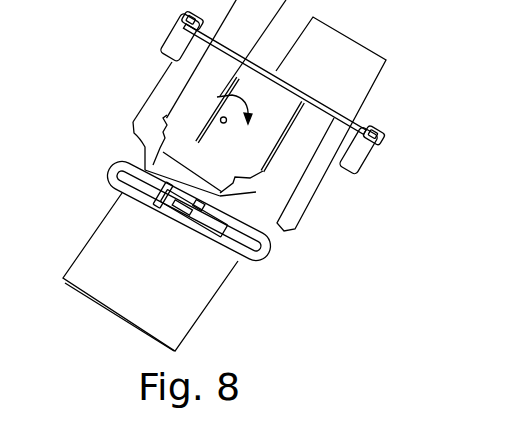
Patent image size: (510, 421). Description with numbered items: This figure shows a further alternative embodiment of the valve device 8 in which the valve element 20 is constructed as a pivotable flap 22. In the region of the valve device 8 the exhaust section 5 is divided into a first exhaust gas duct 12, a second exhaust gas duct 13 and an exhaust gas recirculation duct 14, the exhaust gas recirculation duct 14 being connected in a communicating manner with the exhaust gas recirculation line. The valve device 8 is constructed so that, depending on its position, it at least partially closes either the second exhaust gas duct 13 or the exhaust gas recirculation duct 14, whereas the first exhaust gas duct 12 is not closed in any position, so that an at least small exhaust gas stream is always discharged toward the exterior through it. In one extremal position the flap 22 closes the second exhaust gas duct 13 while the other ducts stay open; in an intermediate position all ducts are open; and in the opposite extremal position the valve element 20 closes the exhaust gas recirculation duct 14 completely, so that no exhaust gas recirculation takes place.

The exhaust section 5 is at (104, 338).
The valve device 8 is at (395, 97).
The first exhaust gas duct 12 is at (318, 146).
The second exhaust gas duct 13 is at (268, 146).
The exhaust gas recirculation duct 14 is at (223, 82).
The valve element 20 is at (200, 144).
The flap 22 is at (192, 178).